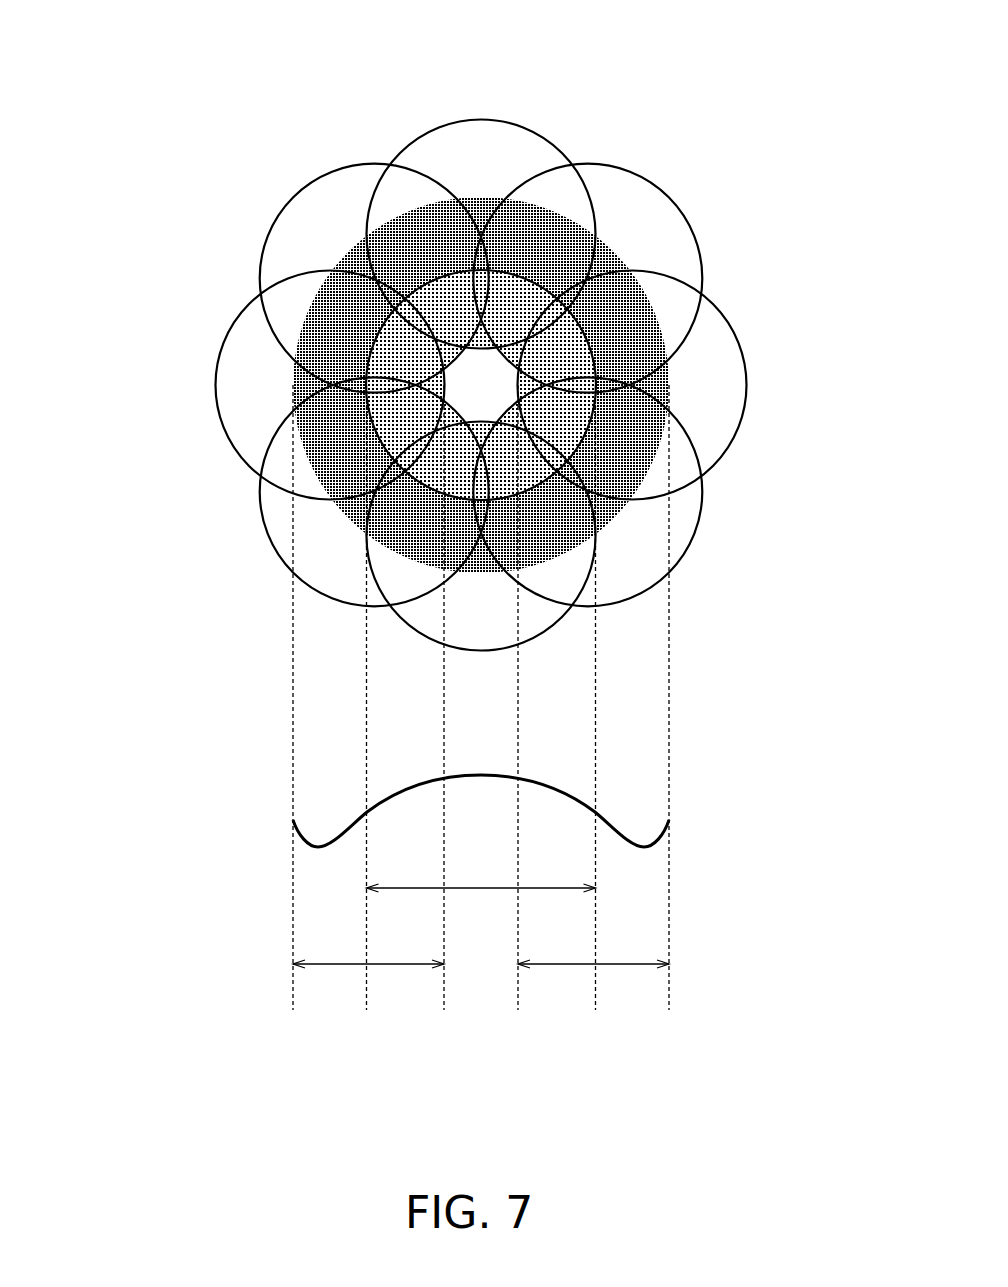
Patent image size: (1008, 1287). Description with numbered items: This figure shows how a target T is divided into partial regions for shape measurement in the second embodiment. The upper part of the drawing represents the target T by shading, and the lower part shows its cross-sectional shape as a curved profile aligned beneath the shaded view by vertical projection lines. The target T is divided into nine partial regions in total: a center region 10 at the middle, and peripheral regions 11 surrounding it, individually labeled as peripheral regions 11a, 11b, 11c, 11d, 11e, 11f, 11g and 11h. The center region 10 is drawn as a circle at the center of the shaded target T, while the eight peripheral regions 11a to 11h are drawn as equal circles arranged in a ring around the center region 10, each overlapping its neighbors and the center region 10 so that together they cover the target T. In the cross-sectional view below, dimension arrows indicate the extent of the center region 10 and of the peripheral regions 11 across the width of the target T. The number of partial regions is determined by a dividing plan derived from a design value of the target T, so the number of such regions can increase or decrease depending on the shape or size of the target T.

The center region 10 is at (580, 338).
The peripheral regions 11 is at (372, 964).
The peripheral region 11a is at (513, 124).
The peripheral region 11b is at (652, 182).
The peripheral region 11c is at (734, 441).
The peripheral region 11d is at (688, 550).
The peripheral region 11e is at (553, 623).
The peripheral region 11f is at (275, 552).
The peripheral region 11g is at (221, 424).
The peripheral region 11h is at (305, 186).
The target T is at (633, 298).